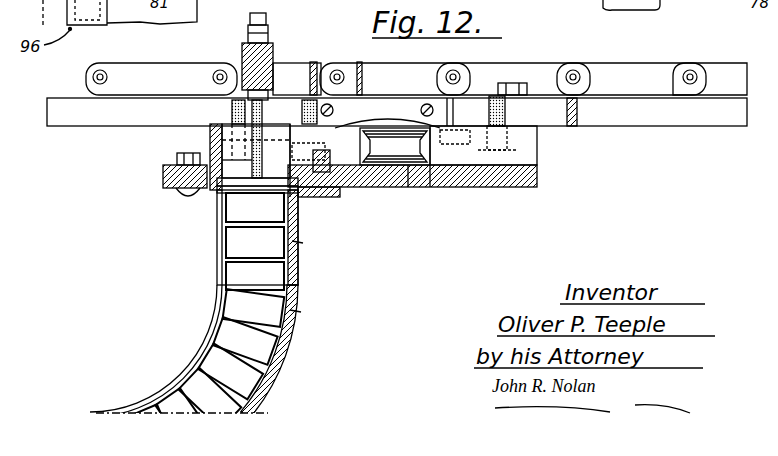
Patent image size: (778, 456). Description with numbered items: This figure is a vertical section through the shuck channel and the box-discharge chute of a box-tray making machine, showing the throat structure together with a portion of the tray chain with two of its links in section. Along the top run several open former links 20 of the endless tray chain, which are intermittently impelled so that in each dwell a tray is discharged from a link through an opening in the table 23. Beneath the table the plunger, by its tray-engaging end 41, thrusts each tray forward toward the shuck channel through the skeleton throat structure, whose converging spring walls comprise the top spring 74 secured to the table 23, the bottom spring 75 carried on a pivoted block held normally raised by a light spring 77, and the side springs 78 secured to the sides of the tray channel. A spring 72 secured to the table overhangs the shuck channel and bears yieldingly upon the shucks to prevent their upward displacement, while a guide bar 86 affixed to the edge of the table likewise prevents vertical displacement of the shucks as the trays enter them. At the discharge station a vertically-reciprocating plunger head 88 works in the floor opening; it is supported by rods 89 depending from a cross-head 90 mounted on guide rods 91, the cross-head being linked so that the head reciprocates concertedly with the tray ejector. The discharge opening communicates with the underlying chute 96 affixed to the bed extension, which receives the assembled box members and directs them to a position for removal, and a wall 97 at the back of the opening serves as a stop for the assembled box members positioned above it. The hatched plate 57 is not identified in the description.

The open former links 20 is at (416, 78).
The table 23 is at (640, 116).
The tray-engaging end 41 is at (395, 146).
The plate 57 is at (473, 180).
The spring 72 is at (522, 97).
The top spring 74 is at (388, 130).
The bottom spring 75 is at (406, 168).
The light spring 77 is at (432, 170).
The side springs 78 is at (453, 143).
The guide bar 86 is at (445, 108).
The plunger head 88 is at (282, 171).
The rods 89 is at (268, 27).
The cross-head 90 is at (276, 54).
The guide rods 91 is at (246, 24).
The chute 96 is at (276, 361).
The wall 97 is at (208, 135).